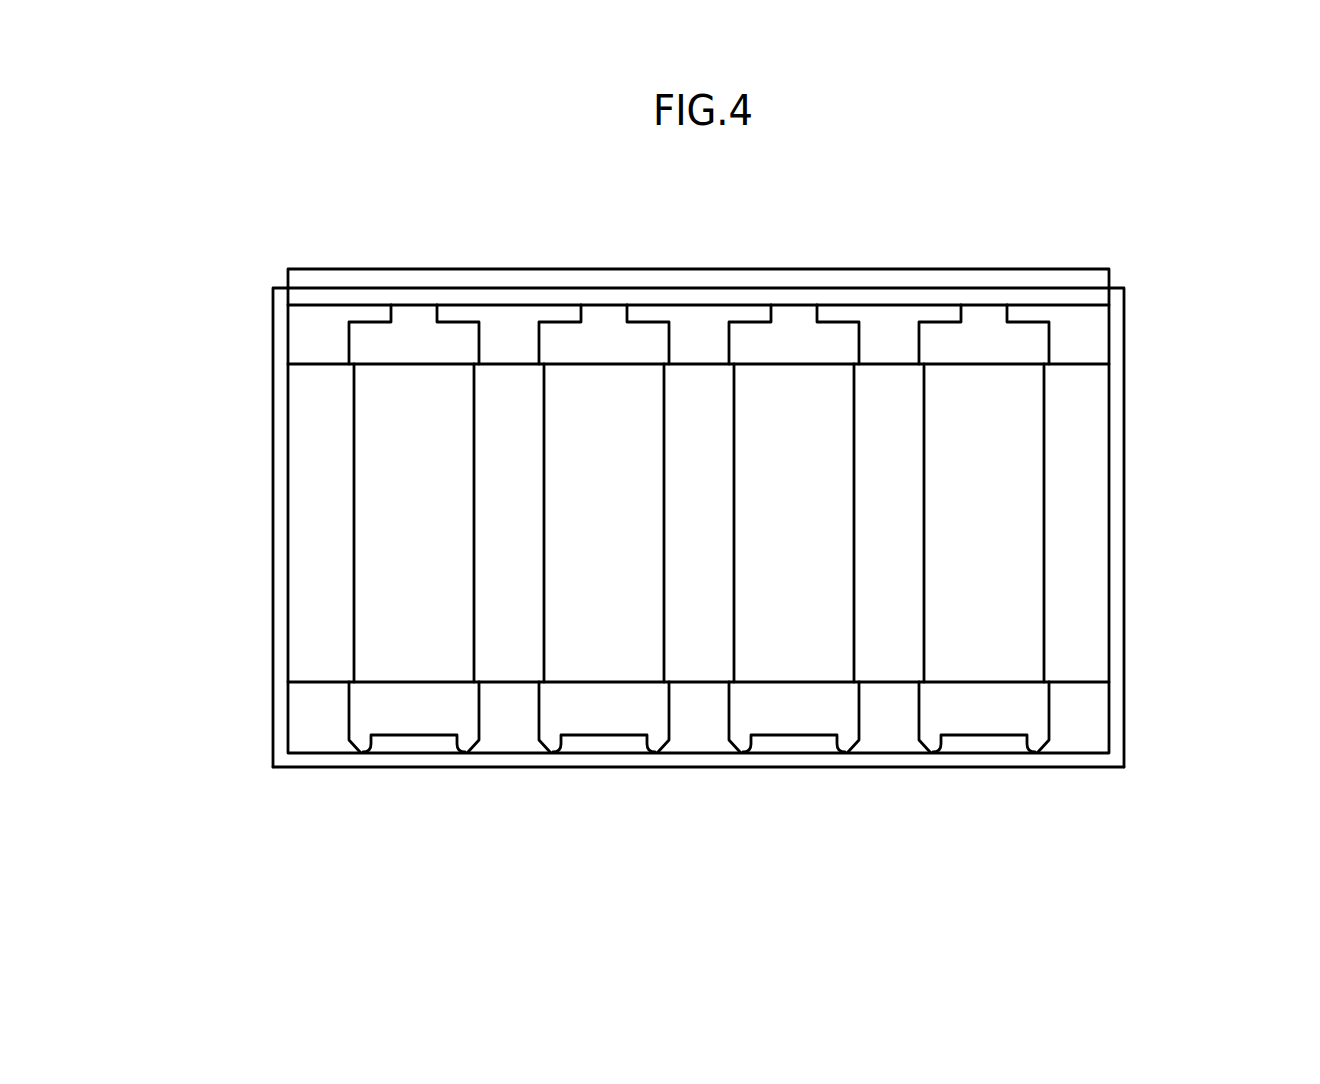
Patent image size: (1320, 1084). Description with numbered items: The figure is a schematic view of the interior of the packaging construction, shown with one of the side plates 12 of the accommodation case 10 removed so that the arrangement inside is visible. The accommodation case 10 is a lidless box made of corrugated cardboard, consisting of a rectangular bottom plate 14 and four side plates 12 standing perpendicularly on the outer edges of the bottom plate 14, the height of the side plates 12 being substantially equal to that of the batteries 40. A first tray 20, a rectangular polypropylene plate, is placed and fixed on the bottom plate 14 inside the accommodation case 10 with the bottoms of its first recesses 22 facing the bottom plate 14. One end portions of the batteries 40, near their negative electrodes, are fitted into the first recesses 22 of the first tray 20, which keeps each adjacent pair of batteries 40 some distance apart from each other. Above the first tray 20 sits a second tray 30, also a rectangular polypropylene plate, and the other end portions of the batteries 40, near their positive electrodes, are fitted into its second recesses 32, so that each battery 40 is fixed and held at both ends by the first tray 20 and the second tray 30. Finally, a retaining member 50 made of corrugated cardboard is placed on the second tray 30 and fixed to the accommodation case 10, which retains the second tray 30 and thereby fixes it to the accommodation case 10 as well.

The accommodation case 10 is at (1170, 558).
The side plates 12 is at (1115, 636).
The bottom plate 14 is at (948, 762).
The first tray 20 is at (322, 680).
The first recesses 22 is at (412, 722).
The second tray 30 is at (322, 365).
The second recesses 32 is at (558, 333).
The batteries 40 is at (595, 547).
The retaining member 50 is at (1063, 283).